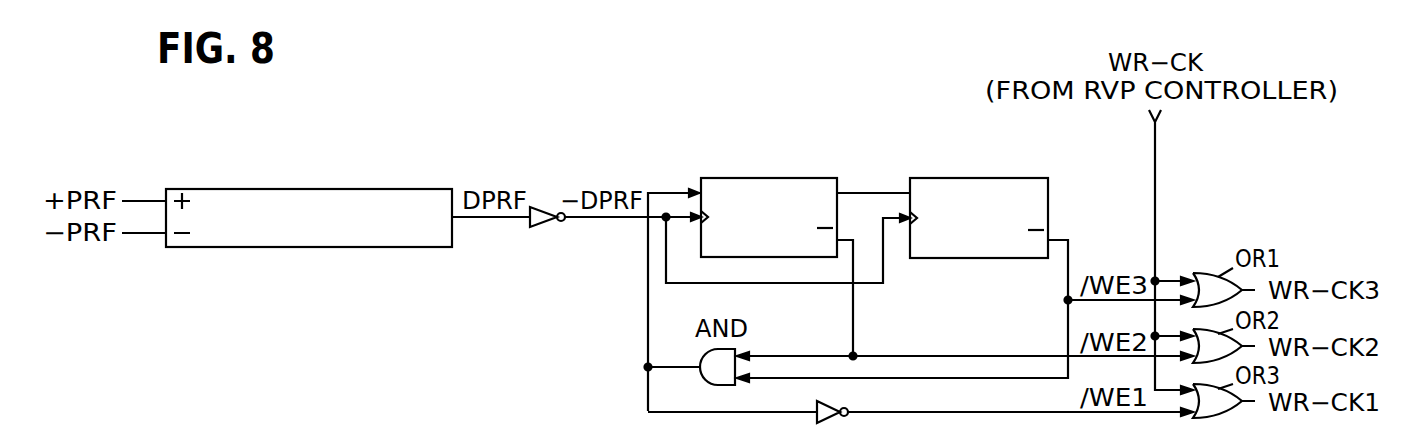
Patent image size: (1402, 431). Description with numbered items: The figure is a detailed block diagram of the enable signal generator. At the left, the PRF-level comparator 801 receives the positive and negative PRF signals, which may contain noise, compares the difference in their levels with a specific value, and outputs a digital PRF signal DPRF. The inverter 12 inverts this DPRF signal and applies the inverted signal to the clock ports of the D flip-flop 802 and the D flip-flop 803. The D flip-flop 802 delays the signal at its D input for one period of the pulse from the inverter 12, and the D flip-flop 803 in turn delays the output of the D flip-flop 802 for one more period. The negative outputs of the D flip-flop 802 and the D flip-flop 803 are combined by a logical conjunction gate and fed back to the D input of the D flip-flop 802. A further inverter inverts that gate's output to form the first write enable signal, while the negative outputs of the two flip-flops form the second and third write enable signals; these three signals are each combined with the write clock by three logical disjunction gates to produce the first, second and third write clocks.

The PRF-level comparator 801 is at (360, 189).
The D flip-flop 802 is at (780, 178).
The D flip-flop 803 is at (978, 178).
The inverter 12 is at (547, 233).